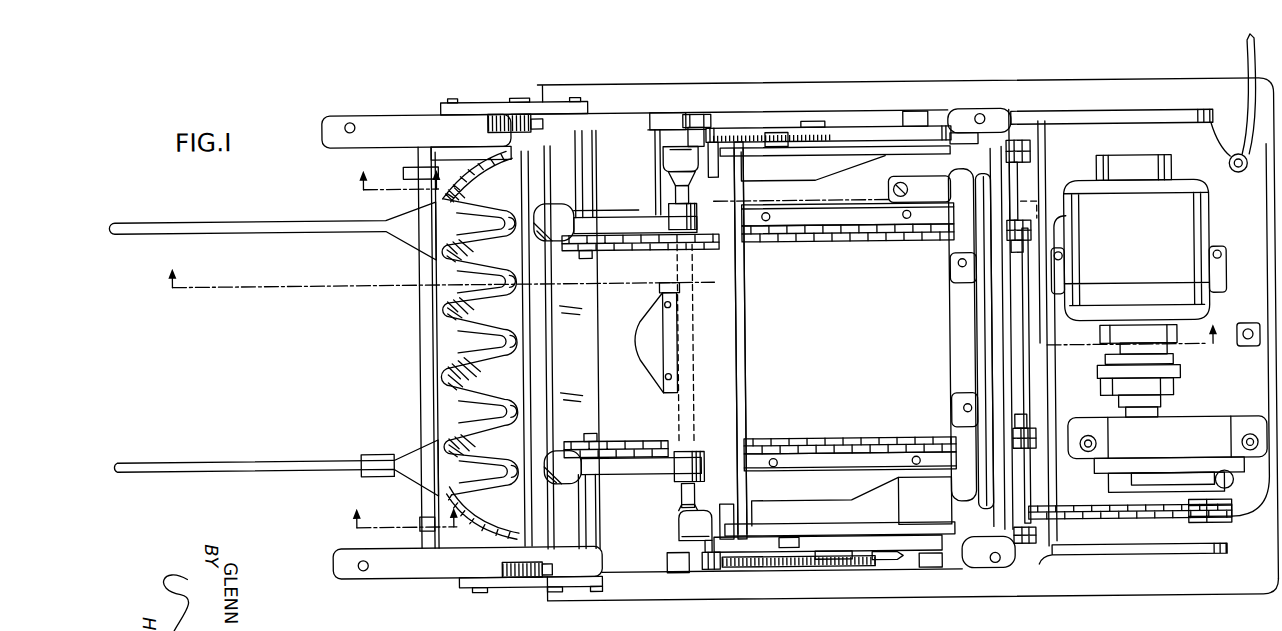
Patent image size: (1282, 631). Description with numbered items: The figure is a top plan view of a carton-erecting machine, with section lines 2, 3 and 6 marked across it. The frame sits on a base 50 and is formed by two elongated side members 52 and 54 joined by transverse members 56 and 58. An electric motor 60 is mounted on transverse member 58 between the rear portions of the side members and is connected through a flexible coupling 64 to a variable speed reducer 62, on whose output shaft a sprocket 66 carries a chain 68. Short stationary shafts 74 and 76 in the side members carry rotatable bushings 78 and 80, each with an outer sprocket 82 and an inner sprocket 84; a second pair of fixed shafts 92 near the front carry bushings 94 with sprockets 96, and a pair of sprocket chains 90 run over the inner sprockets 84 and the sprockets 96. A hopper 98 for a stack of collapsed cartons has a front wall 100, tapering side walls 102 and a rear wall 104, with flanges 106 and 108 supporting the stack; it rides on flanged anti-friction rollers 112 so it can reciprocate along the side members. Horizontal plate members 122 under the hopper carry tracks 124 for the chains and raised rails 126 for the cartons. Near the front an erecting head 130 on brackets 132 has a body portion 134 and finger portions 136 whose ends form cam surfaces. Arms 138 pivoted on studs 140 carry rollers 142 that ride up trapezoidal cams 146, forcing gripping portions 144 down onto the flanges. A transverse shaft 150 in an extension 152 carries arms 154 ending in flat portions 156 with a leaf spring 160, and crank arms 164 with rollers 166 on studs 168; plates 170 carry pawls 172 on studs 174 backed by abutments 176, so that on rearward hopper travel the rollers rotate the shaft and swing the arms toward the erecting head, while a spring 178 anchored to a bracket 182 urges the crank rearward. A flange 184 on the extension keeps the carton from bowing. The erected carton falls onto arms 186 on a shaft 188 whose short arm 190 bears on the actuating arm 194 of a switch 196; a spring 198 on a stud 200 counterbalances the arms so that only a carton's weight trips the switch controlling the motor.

The section line 2- 2 is at (406, 524).
The section line 3- 3 is at (399, 182).
The section line 6- 6 is at (692, 311).
The base 50 is at (807, 94).
The side member 52 is at (638, 574).
The side member 54 is at (622, 112).
The transverse member 56 is at (588, 347).
The transverse member 58 is at (1145, 138).
The electric motor 60 is at (1190, 188).
The variable speed reducer 62 is at (1177, 452).
The flexible coupling 64 is at (1180, 381).
The sprocket 66 is at (1233, 528).
The chain 68 is at (1150, 524).
The stationary shaft 74 is at (1020, 430).
The stationary shaft 76 is at (1014, 257).
The bushing 78 is at (1029, 485).
The bushing 80 is at (1019, 208).
The outer sprocket 82 is at (1033, 152).
The inner sprocket 84 is at (1033, 234).
The sprocket chain 90 is at (777, 244).
The fixed shaft 92 is at (585, 257).
The bushing 94 is at (586, 196).
The sprocket 96 is at (602, 251).
The hopper 98 is at (745, 322).
The front wall 100 is at (746, 364).
The side wall 102 is at (938, 152).
The rear wall 104 is at (993, 320).
The flange 106 is at (953, 284).
The flange 108 is at (840, 179).
The anti-friction roller 112 is at (778, 134).
The plate member 122 is at (887, 196).
The track 124 is at (891, 245).
The raised rail 126 is at (830, 245).
The erecting head 130 is at (452, 350).
The bracket 132 is at (555, 150).
The body portion 134 is at (535, 382).
The finger portion 136 is at (483, 250).
The arm 138 is at (860, 130).
The stud 140 is at (820, 122).
The roller 142 is at (918, 113).
The gripping portion 144 is at (722, 165).
The trapezoidal cam 146 is at (672, 113).
The transverse shaft 150 is at (691, 369).
The extension 152 is at (662, 285).
The arm 154 is at (655, 218).
The flat portion 156 is at (560, 205).
The leaf spring 160 is at (661, 335).
The crank arm 164 is at (667, 152).
The roller 166 is at (720, 116).
The stud 168 is at (698, 114).
The plate 170 is at (472, 108).
The pawl 172 is at (505, 118).
The stud 174 is at (516, 99).
The abutment 176 is at (545, 126).
The spring 178 is at (860, 569).
The bracket 182 is at (888, 563).
The flange 184 is at (650, 364).
The arm 186 is at (258, 231).
The shaft 188 is at (420, 307).
The short arm 190 is at (405, 170).
The actuating arm 194 is at (432, 151).
The switch 196 is at (482, 148).
The spring 198 is at (367, 453).
The stud 200 is at (418, 521).